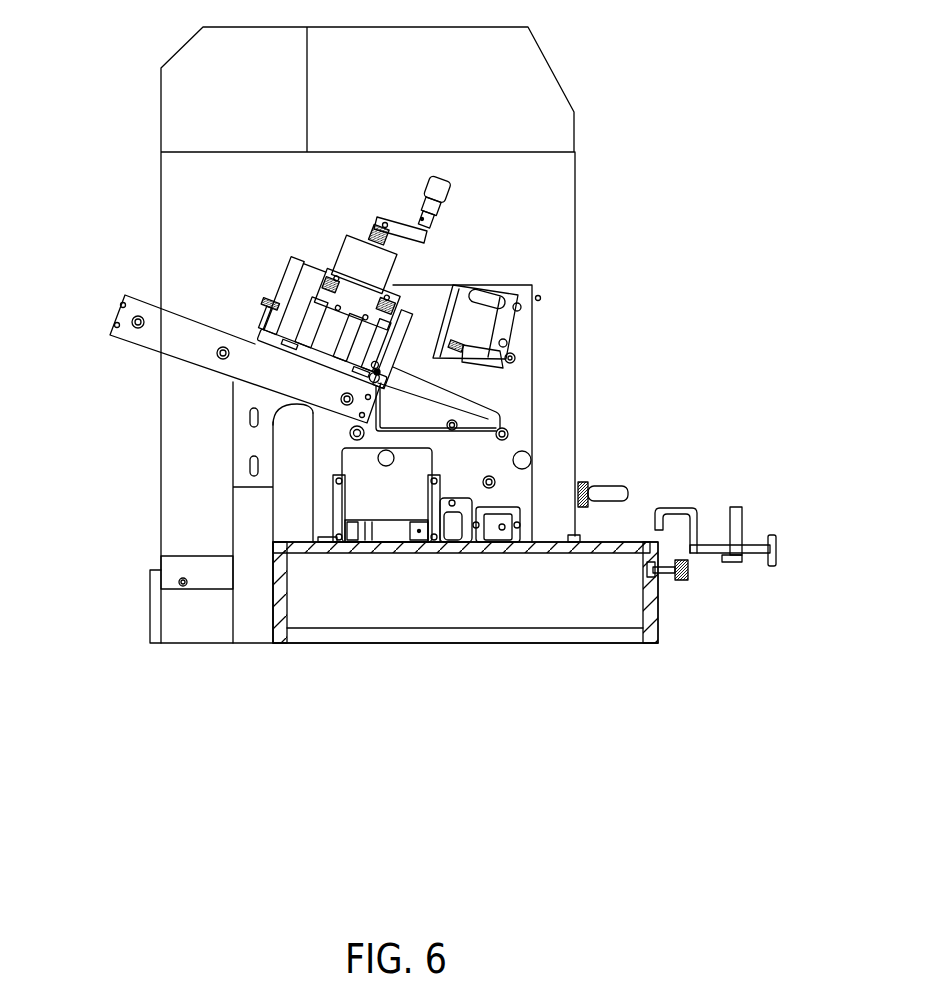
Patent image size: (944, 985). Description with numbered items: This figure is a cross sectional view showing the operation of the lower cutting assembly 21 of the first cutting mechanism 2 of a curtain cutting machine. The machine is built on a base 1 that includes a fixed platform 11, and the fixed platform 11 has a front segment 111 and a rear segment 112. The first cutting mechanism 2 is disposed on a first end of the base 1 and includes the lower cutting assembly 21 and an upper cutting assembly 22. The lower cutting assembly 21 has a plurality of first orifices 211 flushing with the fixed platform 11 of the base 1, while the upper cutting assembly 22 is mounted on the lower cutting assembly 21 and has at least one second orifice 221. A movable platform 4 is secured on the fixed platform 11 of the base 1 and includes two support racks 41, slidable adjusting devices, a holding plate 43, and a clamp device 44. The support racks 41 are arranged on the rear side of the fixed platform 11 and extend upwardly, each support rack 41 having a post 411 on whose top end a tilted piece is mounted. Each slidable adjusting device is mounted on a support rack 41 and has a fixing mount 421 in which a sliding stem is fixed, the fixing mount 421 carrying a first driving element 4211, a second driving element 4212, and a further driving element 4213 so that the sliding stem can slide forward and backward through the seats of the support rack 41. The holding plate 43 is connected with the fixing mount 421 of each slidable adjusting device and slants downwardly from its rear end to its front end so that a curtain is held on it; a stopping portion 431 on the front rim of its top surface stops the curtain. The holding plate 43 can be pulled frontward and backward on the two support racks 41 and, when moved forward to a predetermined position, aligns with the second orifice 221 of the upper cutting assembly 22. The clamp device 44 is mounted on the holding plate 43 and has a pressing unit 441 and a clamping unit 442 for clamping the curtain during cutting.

The base 1 is at (511, 641).
The fixed platform 11 is at (533, 550).
The front segment 111 is at (650, 622).
The rear segment 112 is at (280, 622).
The first cutting mechanism 2 is at (560, 64).
The lower cutting assembly 21 is at (399, 578).
The first orifices 211 is at (385, 537).
The upper cutting assembly 22 is at (517, 363).
The second orifice 221 is at (453, 372).
The movable platform 4 is at (264, 263).
The support rack 41 is at (224, 600).
The post 411 is at (252, 632).
The fixing mount 421 is at (115, 315).
The first driving element 4211 is at (340, 403).
The second driving element 4212 is at (221, 357).
The fixing bolt 4213 is at (135, 330).
The holding plate 43 is at (258, 343).
The stopping portion 431 is at (468, 391).
The clamp device 44 is at (428, 240).
The pressing unit 441 is at (376, 222).
The clamping unit 442 is at (450, 330).